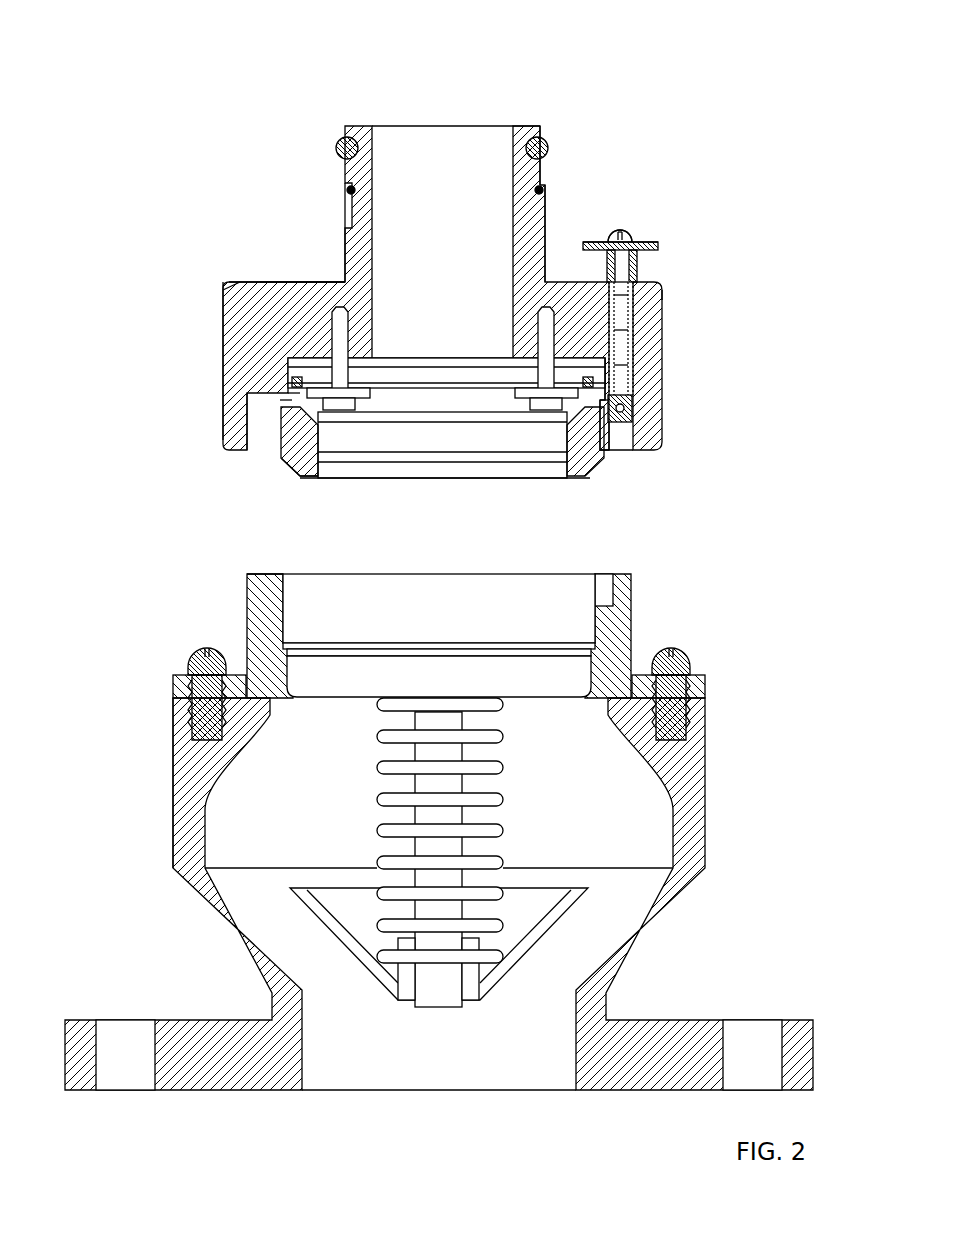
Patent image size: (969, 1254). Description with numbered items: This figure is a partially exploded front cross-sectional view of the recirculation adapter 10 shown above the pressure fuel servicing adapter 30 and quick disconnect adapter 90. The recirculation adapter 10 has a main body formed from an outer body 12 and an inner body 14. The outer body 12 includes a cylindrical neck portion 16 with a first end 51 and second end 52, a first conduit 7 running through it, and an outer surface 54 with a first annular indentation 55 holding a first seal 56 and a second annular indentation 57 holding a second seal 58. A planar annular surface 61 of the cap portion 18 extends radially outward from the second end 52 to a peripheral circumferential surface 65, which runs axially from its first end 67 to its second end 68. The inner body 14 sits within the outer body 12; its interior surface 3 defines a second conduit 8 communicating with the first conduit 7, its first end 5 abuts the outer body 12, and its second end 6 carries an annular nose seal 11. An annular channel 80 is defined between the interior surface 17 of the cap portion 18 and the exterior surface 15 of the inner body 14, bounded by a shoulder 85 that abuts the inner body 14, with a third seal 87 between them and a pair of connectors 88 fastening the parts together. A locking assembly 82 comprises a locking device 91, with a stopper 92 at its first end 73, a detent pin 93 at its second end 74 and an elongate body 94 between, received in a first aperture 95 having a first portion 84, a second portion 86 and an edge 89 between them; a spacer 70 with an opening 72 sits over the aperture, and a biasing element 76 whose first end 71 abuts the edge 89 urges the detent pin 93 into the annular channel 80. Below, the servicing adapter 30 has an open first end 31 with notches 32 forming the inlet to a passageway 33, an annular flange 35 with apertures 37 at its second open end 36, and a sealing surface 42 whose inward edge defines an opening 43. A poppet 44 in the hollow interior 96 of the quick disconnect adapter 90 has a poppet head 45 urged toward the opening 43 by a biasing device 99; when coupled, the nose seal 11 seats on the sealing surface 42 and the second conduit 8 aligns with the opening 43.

The recirculation adapter 10 is at (97, 84).
The interior surface 3 is at (312, 462).
The first end 5 is at (395, 360).
The second end 6 is at (447, 480).
The first conduit 7 is at (452, 208).
The second conduit 8 is at (452, 450).
The nose seal 11 is at (284, 468).
The outer body 12 is at (256, 278).
The inner body 14 is at (282, 456).
The exterior surface 15 is at (612, 450).
The neck portion 16 is at (343, 235).
The interior surface 17 is at (640, 440).
The cap portion 18 is at (228, 302).
The pressure fuel servicing adapter 30 is at (204, 622).
The open first end 31 is at (256, 574).
The notches 32 is at (614, 590).
The passageway 33 is at (452, 623).
The annular flange 35 is at (708, 692).
The second open end 36 is at (700, 762).
The apertures 37 is at (690, 670).
The sealing surface 42 is at (590, 648).
The opening 43 is at (300, 650).
The poppet 44 is at (614, 800).
The poppet head 45 is at (333, 688).
The first end 51 is at (527, 126).
The second end 52 is at (549, 280).
The outer surface 54 is at (543, 178).
The first annular indentation 55 is at (540, 160).
The first seal 56 is at (545, 152).
The second annular indentation 57 is at (358, 150).
The second seal 58 is at (349, 188).
The annular surface 61 is at (288, 282).
The circumferential surface 65 is at (225, 362).
The first end 67 is at (222, 282).
The second end 68 is at (248, 432).
The spacer 70 is at (640, 258).
The first end 71 is at (605, 302).
The opening 72 is at (630, 270).
The first end 73 is at (619, 232).
The second end 74 is at (622, 455).
The biasing element 76 is at (600, 362).
The annular channel 80 is at (296, 382).
The locking assembly 82 is at (713, 184).
The first portion 84 is at (624, 290).
The shoulder 85 is at (295, 393).
The second portion 86 is at (622, 330).
The third seal 87 is at (290, 400).
The connectors 88 is at (350, 330).
The edge 89 is at (605, 332).
The quick disconnect adapter 90 is at (176, 776).
The locking device 91 is at (636, 240).
The stopper 92 is at (660, 246).
The detent pin 93 is at (633, 408).
The body 94 is at (622, 366).
The first aperture 95 is at (622, 300).
The hollow interior 96 is at (350, 848).
The biasing device 99 is at (500, 832).